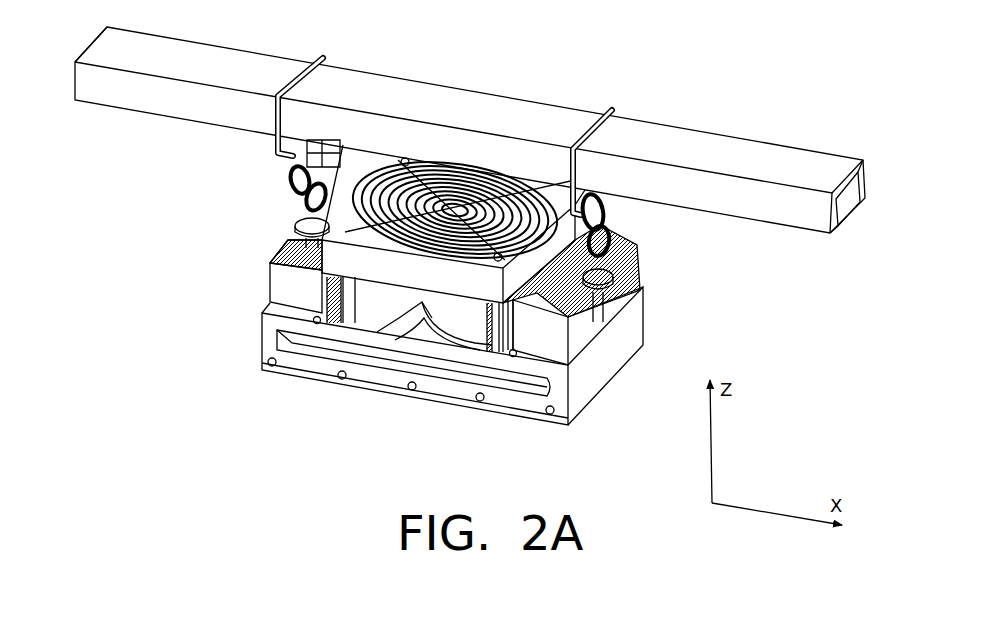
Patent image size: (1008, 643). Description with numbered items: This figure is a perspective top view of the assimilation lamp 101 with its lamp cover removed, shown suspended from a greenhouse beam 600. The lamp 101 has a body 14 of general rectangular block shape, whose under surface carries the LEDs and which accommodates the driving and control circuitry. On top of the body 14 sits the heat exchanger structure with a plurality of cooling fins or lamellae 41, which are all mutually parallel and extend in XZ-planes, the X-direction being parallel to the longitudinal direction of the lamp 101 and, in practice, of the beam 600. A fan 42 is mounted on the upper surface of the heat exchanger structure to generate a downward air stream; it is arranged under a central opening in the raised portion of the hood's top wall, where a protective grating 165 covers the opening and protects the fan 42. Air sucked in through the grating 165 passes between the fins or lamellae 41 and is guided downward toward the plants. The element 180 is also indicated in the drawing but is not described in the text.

The greenhouse beam 600 is at (697, 145).
The assimilation lamp device 101 is at (220, 395).
The body 14 is at (613, 348).
The cable 180 is at (427, 327).
The fan 42 is at (453, 176).
The protective grating 165 is at (438, 163).
The cooling fins or lamellae 41 is at (640, 270).